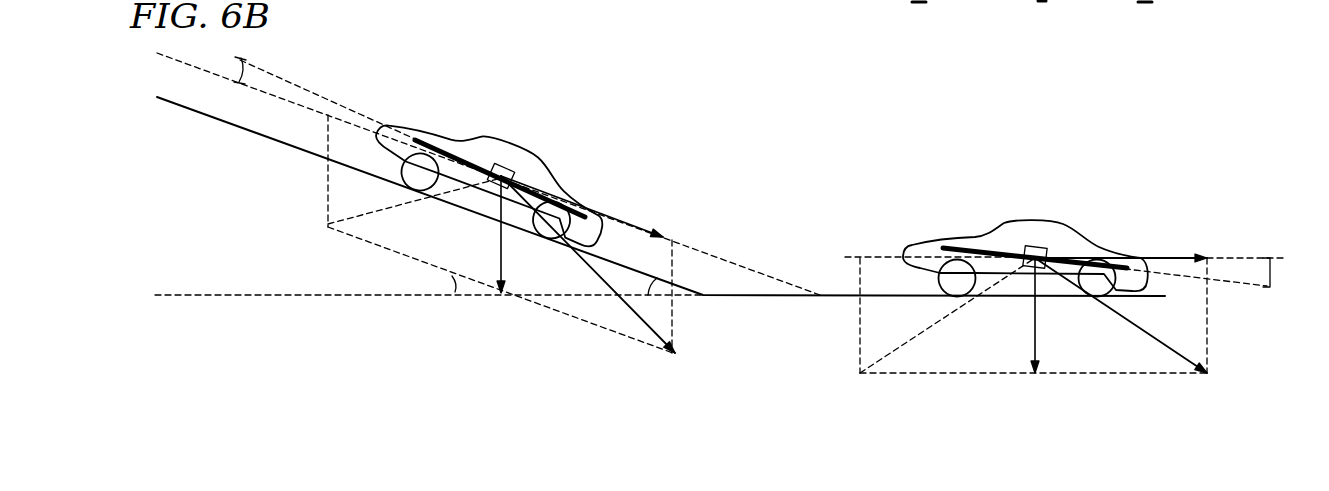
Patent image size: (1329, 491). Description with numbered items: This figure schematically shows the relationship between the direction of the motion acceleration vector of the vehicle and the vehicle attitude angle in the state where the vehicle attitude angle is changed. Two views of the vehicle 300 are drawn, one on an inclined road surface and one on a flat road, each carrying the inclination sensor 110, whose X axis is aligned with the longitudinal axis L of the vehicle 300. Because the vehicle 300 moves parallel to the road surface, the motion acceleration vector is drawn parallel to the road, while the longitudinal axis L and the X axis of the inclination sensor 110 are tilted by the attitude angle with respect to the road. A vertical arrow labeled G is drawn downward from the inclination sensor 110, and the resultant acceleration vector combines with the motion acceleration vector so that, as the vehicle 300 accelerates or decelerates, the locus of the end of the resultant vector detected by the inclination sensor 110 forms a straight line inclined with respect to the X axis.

The inclination sensor 110 is at (504, 166).
The vehicle 300 is at (595, 208).
The longitudinal axis L is at (527, 183).
The gravitational acceleration direction G is at (503, 252).